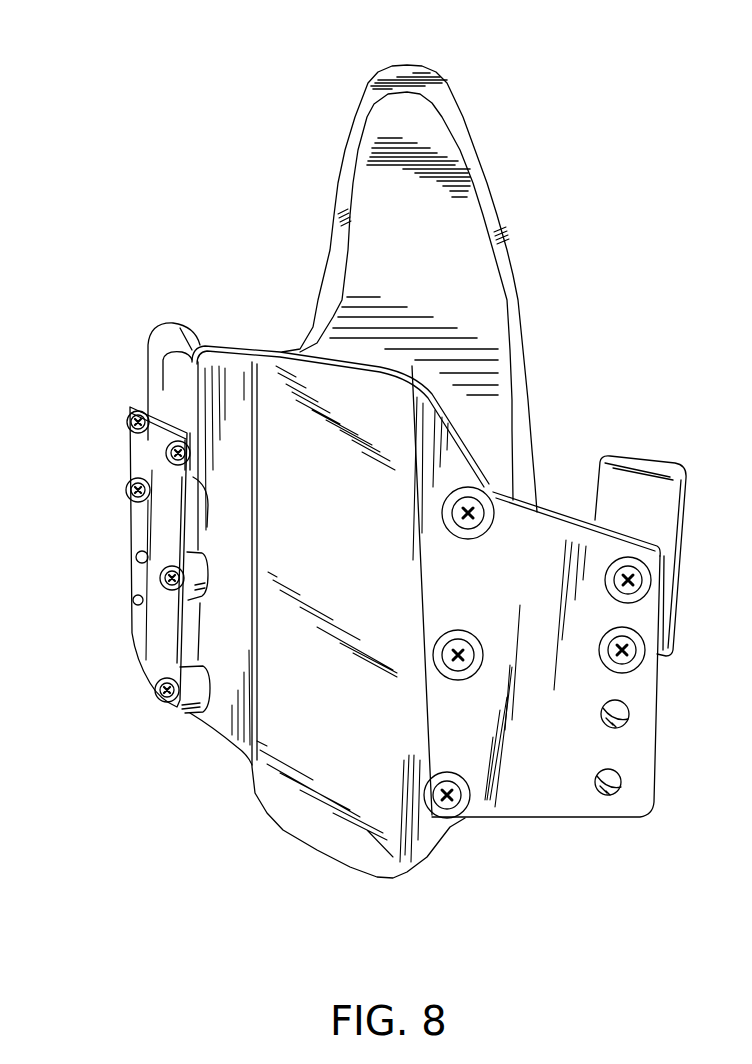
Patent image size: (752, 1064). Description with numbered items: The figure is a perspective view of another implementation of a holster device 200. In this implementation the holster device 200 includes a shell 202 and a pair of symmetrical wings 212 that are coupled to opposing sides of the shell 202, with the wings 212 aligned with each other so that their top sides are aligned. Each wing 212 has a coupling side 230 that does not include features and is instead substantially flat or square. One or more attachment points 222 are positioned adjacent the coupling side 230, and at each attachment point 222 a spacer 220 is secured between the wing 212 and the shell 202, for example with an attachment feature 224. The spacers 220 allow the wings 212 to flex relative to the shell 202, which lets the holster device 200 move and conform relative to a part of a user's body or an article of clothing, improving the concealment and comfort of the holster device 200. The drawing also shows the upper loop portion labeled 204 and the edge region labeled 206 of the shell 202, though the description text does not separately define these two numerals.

The holster device 200 is at (584, 64).
The shell 202 is at (398, 422).
The loop 204 is at (480, 257).
The strap edge 206 is at (426, 370).
The wings 212 is at (135, 630).
The spacers 220 is at (490, 490).
The attachment points 222 is at (164, 577).
The attachment feature 224 is at (152, 688).
The coupling side 230 is at (183, 623).